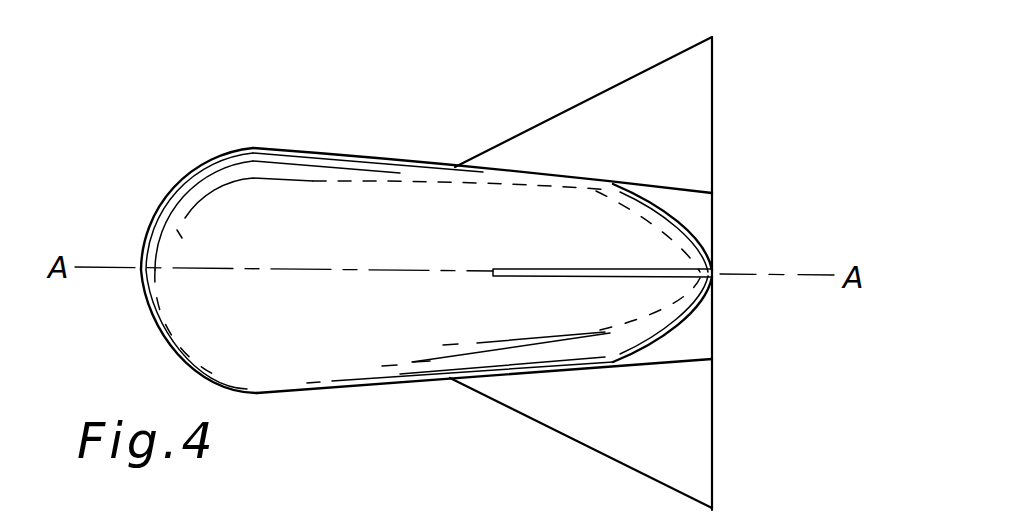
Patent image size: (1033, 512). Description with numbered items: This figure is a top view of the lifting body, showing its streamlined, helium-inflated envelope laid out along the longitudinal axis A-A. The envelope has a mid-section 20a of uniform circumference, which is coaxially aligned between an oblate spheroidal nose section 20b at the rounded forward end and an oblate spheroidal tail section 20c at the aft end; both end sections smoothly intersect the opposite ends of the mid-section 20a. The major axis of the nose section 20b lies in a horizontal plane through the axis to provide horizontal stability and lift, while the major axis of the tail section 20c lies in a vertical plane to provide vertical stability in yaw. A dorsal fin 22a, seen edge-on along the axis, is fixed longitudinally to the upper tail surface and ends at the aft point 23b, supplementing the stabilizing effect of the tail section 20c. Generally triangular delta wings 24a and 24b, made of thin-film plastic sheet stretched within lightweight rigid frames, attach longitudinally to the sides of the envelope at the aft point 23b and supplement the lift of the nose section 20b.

The mid-section 20a is at (324, 167).
The nose section 20b is at (190, 198).
The tail section 20c is at (677, 305).
The dorsal fin 22a is at (525, 279).
The aft point 23b is at (712, 275).
The delta wing 24a is at (690, 453).
The delta wing 24b is at (690, 106).